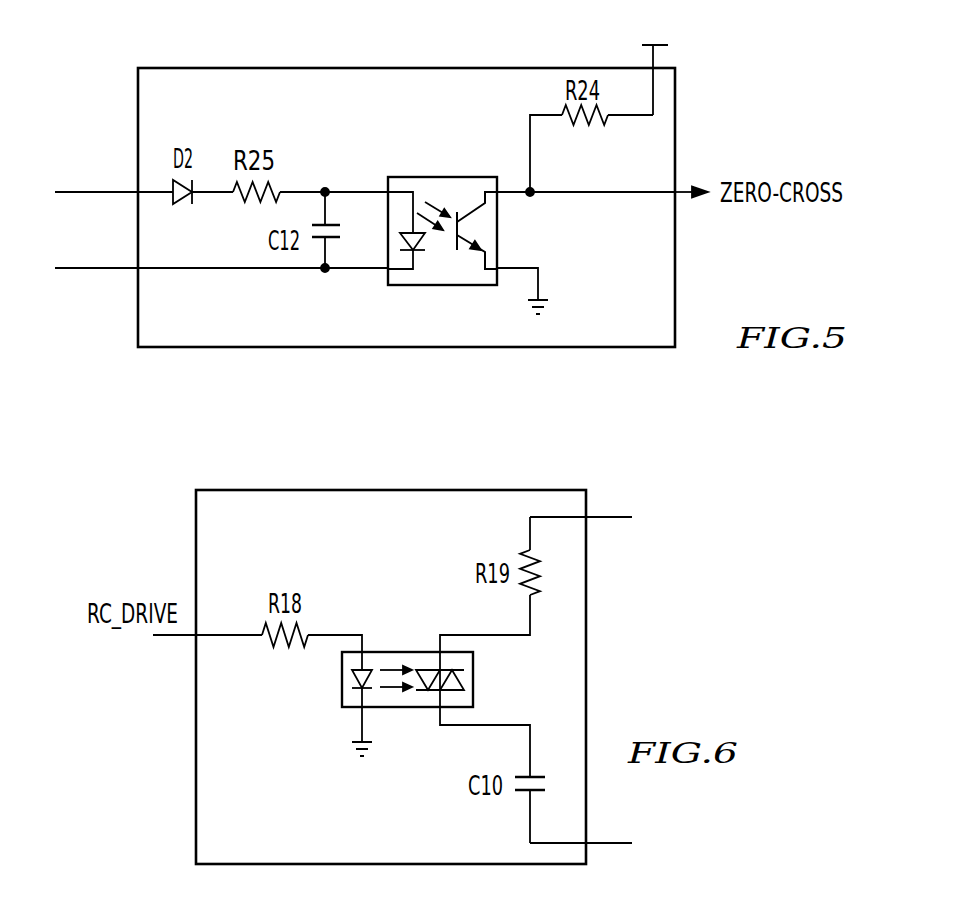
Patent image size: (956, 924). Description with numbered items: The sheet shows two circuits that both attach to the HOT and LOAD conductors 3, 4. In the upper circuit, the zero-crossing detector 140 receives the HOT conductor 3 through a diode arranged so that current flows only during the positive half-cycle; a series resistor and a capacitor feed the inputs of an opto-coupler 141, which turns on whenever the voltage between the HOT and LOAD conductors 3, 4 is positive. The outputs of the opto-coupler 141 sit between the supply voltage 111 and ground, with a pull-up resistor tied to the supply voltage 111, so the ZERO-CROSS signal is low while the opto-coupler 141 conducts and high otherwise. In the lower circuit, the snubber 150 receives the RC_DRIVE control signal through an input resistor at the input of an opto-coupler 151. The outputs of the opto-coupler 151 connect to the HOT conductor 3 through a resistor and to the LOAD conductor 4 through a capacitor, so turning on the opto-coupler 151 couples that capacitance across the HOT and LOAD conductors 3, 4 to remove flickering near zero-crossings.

In FIG. 5, the zero-crossing detector 140 is at (287, 68).
In FIG. 5, the opto-coupler 141 is at (436, 159).
In FIG. 5, the supply voltage 111 is at (669, 23).
In FIG. 5, the HOT conductor 3 is at (70, 193).
In FIG. 6, the HOT conductor 3 is at (618, 518).
In FIG. 5, the LOAD conductor 4 is at (62, 268).
In FIG. 6, the LOAD conductor 4 is at (622, 845).
In FIG. 6, the snubber 150 is at (523, 490).
In FIG. 6, the opto-coupler 151 is at (406, 634).